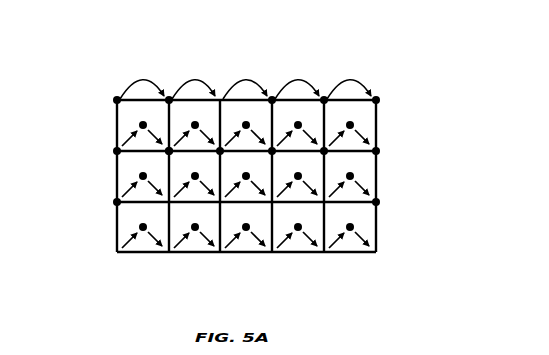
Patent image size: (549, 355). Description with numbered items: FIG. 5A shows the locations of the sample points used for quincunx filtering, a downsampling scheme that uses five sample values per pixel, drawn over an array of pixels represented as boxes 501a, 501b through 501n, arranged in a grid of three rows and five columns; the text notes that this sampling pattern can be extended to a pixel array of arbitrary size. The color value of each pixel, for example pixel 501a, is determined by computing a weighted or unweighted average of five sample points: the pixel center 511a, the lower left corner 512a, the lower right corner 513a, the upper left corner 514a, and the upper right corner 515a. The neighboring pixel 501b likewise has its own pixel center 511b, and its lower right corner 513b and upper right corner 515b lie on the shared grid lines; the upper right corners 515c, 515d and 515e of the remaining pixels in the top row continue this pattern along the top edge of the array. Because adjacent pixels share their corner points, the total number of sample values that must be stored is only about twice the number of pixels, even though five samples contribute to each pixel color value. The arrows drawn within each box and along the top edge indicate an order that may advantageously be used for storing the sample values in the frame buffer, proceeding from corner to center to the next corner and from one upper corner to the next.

The pixel 501a is at (120, 103).
The pixel 501b is at (189, 84).
The pixel 501n is at (352, 248).
The pixel center 511a is at (140, 124).
The pixel center 511b is at (196, 121).
The lower left corner 512a is at (115, 150).
The lower right corner 513a is at (168, 153).
The lower right corner 513b is at (219, 153).
The upper left corner 514a is at (115, 99).
The upper right corner 515a is at (162, 92).
The upper right corner 515b is at (224, 92).
The upper right corner 515c is at (275, 93).
The upper right corner 515d is at (328, 93).
The upper right corner 515e is at (379, 93).